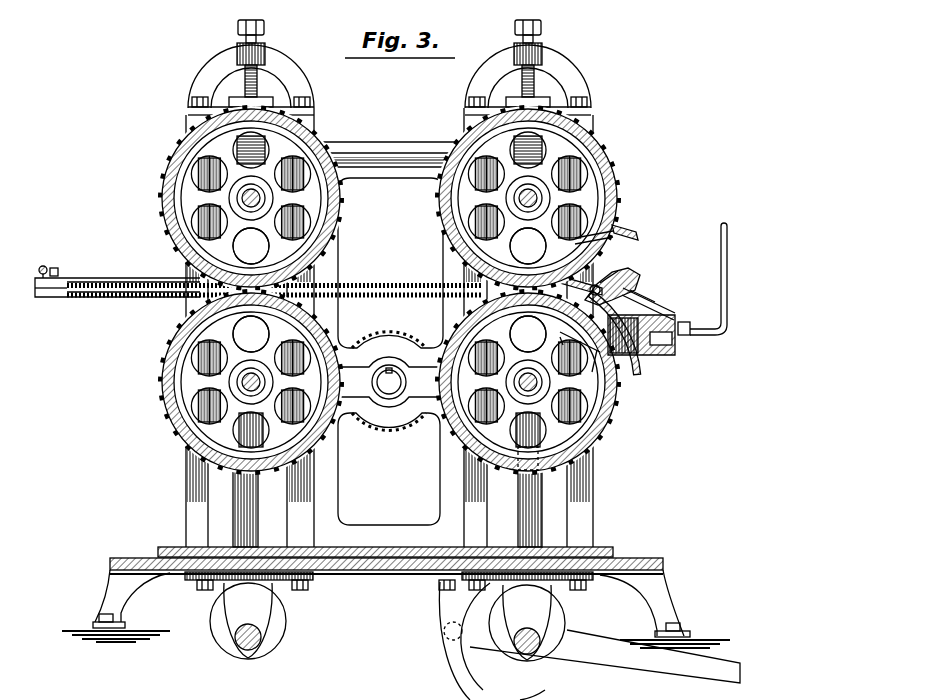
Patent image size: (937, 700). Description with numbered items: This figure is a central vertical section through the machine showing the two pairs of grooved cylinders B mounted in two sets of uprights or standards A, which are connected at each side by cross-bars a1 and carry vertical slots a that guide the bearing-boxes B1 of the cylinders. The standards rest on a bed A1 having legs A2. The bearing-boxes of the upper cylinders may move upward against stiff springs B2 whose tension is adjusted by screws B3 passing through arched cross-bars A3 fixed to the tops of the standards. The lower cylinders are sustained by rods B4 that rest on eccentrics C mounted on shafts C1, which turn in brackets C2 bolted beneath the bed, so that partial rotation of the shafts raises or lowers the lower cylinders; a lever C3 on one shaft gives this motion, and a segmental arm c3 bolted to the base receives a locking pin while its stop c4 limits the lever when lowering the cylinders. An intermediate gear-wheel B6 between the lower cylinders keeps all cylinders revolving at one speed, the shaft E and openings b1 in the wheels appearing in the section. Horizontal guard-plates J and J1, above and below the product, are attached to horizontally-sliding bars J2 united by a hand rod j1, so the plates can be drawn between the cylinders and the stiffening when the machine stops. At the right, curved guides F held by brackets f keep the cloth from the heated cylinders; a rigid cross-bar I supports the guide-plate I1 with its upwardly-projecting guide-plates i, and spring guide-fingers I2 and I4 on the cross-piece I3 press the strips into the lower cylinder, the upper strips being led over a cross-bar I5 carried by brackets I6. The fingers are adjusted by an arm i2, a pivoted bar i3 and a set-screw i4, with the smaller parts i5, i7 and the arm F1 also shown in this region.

The vertical slot a is at (415, 327).
The cross-bar a1 is at (396, 152).
The upright A is at (190, 508).
The bed A1 is at (141, 558).
The leg A2 is at (108, 585).
The arched cross-bar A3 is at (209, 71).
The cylinder B is at (166, 226).
The bearing-box B1 is at (208, 167).
The spring B2 is at (237, 133).
The screw B3 is at (243, 41).
The rod B4 is at (240, 498).
The intermediate gear-wheel B6 is at (385, 422).
The opening in wheel b1 is at (389, 290).
The shaft E is at (240, 197).
The guard-plate J is at (150, 283).
The lower guard-plate J1 is at (108, 297).
The sliding bar J2 is at (60, 297).
The rod j1 is at (45, 265).
The curved guide F is at (630, 360).
The guide arm F1 is at (630, 254).
The bracket f is at (625, 302).
The cross-bar I is at (660, 356).
The guide-plate I1 is at (662, 313).
The spring guide-finger I2 is at (561, 357).
The cross-piece I3 is at (637, 276).
The spring-finger I4 is at (587, 370).
The cross-bar I5 is at (727, 265).
The bracket I6 is at (727, 289).
The guide-plate i is at (618, 288).
The arm i2 is at (621, 268).
The bar i3 is at (648, 293).
The set-screw i4 is at (690, 323).
The block slot i5 is at (672, 345).
The slide pin i7 is at (558, 334).
The eccentric C is at (284, 615).
The shaft C1 is at (250, 651).
The bracket C2 is at (387, 621).
The lever C3 is at (609, 655).
The segmental arm c3 is at (464, 641).
The stop c4 is at (542, 692).